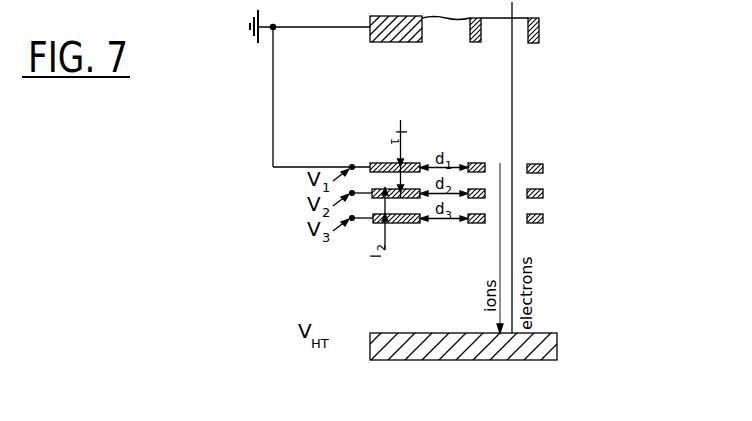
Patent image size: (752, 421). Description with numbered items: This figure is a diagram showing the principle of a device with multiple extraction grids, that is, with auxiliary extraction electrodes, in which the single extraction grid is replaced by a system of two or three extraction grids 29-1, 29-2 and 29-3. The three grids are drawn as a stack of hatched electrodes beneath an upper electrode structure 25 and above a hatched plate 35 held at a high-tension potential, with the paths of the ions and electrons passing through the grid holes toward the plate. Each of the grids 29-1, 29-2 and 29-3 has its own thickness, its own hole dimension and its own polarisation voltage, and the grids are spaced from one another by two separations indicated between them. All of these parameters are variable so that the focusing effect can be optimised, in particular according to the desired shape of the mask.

The electrode structure 25 is at (540, 27).
The extraction grid 29-1 is at (574, 167).
The extraction grid 29-2 is at (574, 192).
The extraction grid 29-3 is at (574, 218).
The high-voltage target plate 35 is at (557, 348).